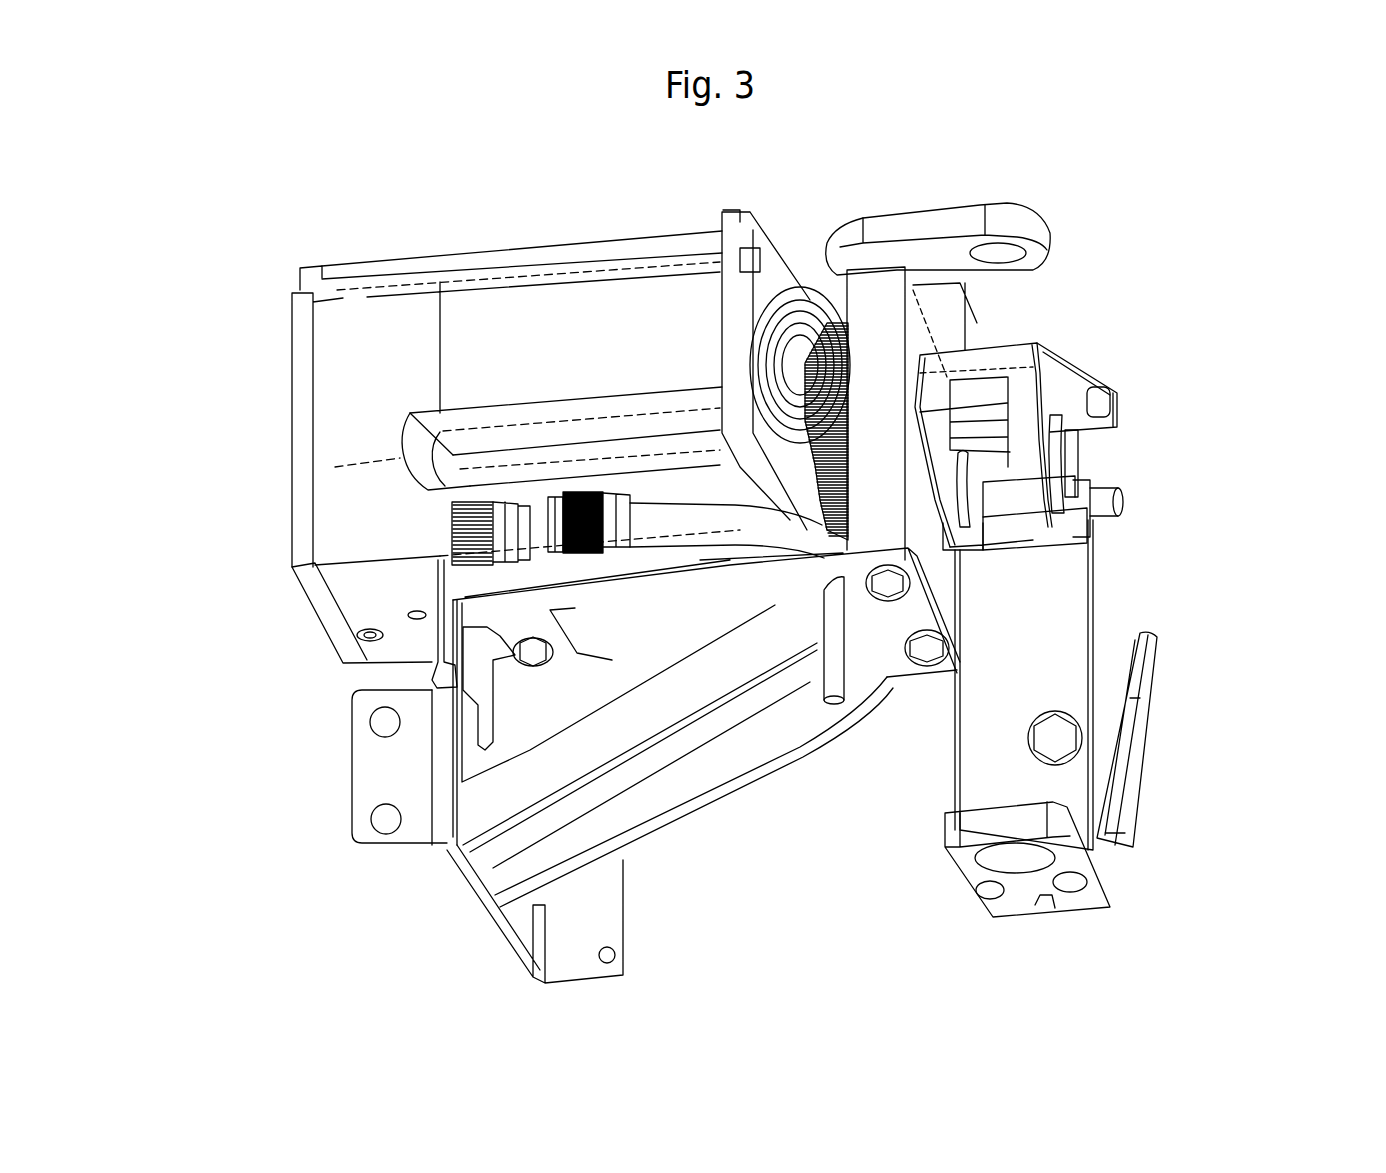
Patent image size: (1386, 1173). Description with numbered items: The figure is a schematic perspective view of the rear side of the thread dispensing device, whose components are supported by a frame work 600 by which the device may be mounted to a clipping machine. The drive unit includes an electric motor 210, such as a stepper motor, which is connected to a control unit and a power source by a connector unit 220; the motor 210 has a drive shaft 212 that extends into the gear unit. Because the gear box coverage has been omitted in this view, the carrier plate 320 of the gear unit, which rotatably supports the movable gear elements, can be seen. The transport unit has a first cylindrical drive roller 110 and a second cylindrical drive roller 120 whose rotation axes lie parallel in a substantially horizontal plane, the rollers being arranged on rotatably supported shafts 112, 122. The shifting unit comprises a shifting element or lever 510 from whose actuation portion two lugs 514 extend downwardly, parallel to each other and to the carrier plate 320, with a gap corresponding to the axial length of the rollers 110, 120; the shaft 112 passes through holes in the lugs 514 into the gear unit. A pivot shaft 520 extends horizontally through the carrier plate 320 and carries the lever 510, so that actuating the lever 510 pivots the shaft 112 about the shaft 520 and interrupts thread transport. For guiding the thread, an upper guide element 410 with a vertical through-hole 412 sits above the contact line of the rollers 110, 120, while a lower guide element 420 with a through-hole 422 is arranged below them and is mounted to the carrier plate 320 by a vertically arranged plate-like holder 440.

The first cylindrical drive roller 110 is at (998, 503).
The shaft 112 is at (1060, 480).
The second cylindrical drive roller 120 is at (1010, 540).
The shaft 122 is at (1103, 502).
The electric motor 210 is at (507, 327).
The drive shaft 212 is at (811, 347).
The connector unit 220 is at (340, 385).
The carrier plate 320 is at (928, 562).
The upper guide element 410 is at (981, 211).
The vertical through-hole 412 is at (1012, 255).
The lower guide element 420 is at (951, 876).
The through-hole 422 is at (998, 856).
The plate-like holder 440 is at (987, 702).
The shifting element or lever 510 is at (1130, 449).
The pivot shaft 520 is at (1058, 408).
The lugs 514 is at (953, 490).
The frame work 600 is at (817, 767).